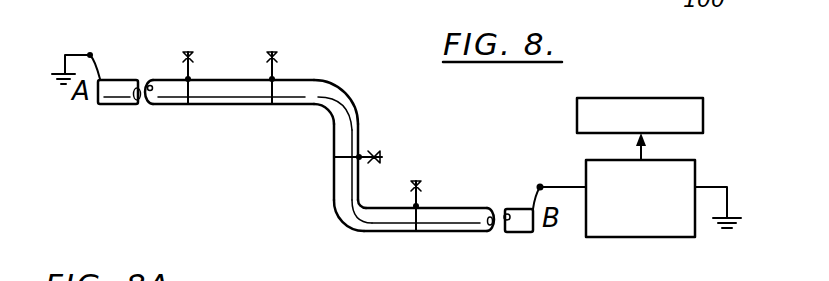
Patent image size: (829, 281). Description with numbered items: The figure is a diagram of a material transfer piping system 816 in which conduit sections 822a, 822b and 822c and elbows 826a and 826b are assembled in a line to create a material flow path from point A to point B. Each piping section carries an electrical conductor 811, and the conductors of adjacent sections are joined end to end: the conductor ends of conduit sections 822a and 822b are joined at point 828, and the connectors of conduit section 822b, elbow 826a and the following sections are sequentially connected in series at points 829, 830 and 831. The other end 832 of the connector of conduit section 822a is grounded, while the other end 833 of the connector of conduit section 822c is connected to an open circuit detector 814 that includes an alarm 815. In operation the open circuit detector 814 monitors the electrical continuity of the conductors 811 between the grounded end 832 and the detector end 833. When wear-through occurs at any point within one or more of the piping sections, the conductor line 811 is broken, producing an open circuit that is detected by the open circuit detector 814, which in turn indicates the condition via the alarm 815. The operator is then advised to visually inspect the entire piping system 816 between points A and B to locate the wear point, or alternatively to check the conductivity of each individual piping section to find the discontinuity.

The other end of the section 822a connector 832 is at (90, 52).
The conduit section 822a is at (150, 105).
The conduit section 822b is at (247, 98).
The conduit section 822c is at (443, 222).
The point 828 is at (195, 62).
The point 829 is at (280, 65).
The point 830 is at (376, 152).
The point 831 is at (422, 188).
The material transfer piping system 816 is at (345, 75).
The elbow 826a is at (354, 112).
The elbow 826b is at (340, 218).
The electrical conductor 811 is at (533, 198).
The other end of section 822c connector 833 is at (540, 185).
The open circuit detector 814 is at (660, 237).
The alarm 815 is at (703, 112).